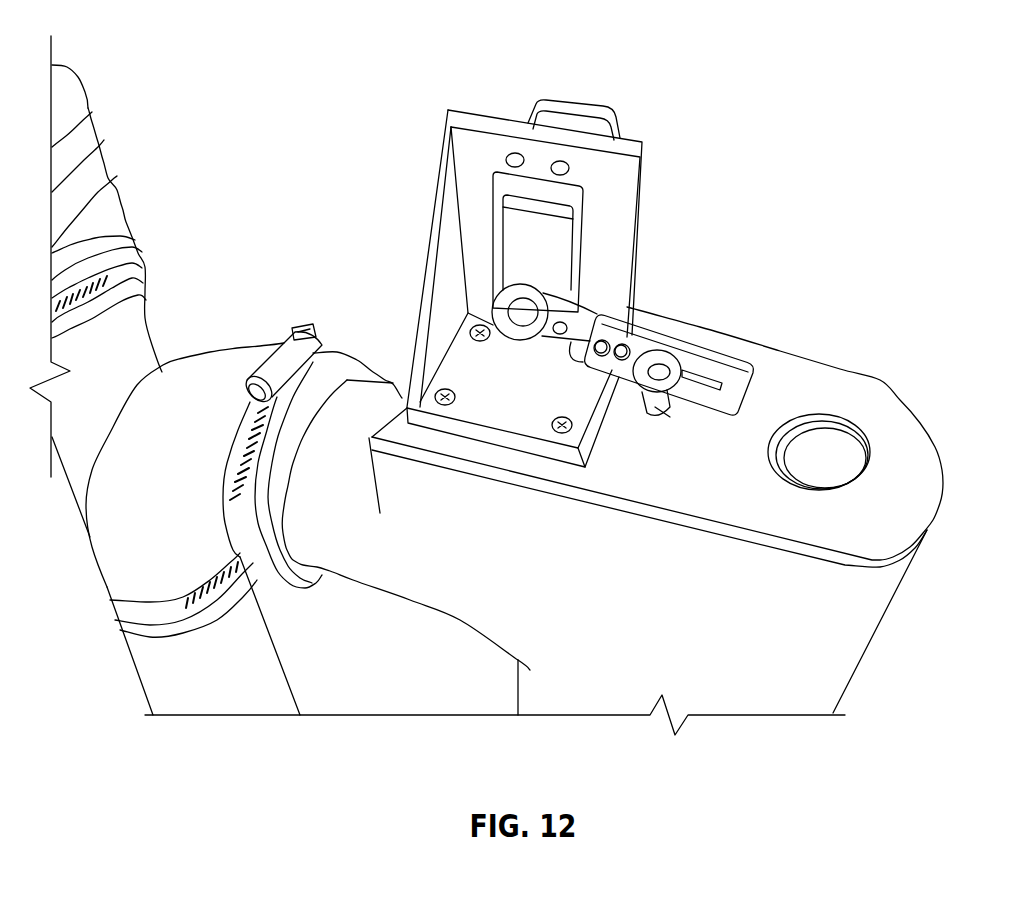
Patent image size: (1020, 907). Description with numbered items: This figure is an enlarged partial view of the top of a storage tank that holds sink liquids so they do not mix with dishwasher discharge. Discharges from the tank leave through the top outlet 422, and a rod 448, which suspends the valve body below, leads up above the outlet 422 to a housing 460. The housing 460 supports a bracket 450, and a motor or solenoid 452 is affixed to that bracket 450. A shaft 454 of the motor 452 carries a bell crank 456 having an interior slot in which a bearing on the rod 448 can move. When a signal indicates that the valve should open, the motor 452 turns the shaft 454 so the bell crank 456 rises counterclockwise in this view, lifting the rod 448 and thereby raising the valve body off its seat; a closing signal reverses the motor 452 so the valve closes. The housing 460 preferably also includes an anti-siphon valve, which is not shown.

The outlet 422 is at (232, 332).
The rod 448 is at (667, 412).
The bracket 450 is at (622, 196).
The motor or solenoid 452 is at (616, 109).
The shaft 454 is at (528, 313).
The bell crank 456 is at (672, 332).
The housing 460 is at (853, 625).